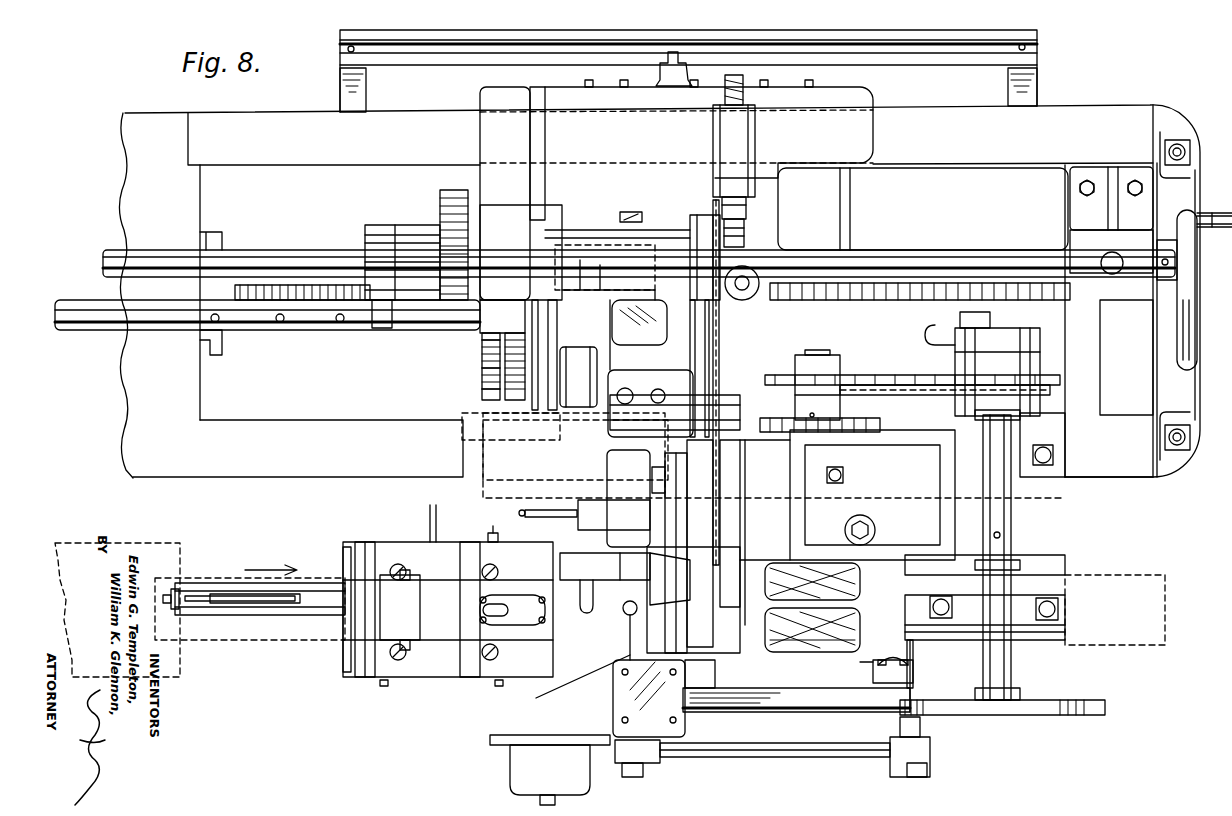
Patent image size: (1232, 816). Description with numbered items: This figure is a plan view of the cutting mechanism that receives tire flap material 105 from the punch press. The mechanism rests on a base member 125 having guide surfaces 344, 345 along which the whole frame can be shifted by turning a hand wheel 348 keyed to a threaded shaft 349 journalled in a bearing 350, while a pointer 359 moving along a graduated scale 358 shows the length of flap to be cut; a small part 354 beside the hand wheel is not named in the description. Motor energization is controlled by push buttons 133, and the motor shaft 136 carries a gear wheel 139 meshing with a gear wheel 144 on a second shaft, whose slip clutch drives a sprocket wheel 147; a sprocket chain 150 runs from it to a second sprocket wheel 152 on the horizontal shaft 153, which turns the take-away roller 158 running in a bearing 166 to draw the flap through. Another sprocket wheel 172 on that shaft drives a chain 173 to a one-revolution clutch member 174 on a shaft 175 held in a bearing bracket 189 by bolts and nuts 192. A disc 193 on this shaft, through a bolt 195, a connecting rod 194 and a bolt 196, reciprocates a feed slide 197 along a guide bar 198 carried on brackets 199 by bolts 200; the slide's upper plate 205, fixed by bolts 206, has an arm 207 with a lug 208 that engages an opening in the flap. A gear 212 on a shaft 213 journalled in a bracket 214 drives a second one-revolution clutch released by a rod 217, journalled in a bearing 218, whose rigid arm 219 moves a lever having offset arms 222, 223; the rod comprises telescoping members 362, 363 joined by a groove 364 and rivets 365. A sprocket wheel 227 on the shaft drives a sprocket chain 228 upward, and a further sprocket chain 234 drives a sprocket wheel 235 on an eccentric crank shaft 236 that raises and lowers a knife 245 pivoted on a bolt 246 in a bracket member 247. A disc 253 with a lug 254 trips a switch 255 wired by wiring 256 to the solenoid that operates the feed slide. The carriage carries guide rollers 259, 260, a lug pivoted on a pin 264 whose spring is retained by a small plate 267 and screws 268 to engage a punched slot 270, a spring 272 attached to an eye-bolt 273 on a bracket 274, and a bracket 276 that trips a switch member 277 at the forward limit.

The tire flap material 105 is at (310, 640).
The base member 125 is at (1158, 478).
The push buttons 133 is at (540, 800).
The shaft 136 is at (165, 250).
The gear wheel 139 is at (631, 212).
The gear wheel 144 is at (570, 250).
The sprocket wheel 147 is at (580, 395).
The sprocket chain 150 is at (680, 370).
The second sprocket wheel 152 is at (760, 390).
The horizontal shaft 153 is at (816, 340).
The take-away roller 158 is at (795, 653).
The bearing 166 is at (800, 527).
The second sprocket wheel 172 is at (779, 374).
The chain 173 is at (902, 385).
The clutch member 174 is at (1040, 356).
The shaft 175 is at (1020, 540).
The bearing bracket 189 is at (1020, 572).
The bolts and nuts 192 is at (1058, 612).
The disc 193 is at (1080, 718).
The connecting rod 194 is at (766, 758).
The bolt 195 is at (931, 766).
The bolt 196 is at (640, 777).
The feed slide 197 is at (686, 724).
The guide bar 198 is at (788, 710).
The brackets 199 is at (870, 668).
The bolts 200 is at (578, 726).
The upper plate 205 is at (628, 745).
The bolts 206 is at (715, 672).
The horizontally extending arm 207 is at (564, 681).
The lug 208 is at (625, 612).
The gear 212 is at (446, 205).
The shaft 213 is at (380, 226).
The bracket 214 is at (552, 228).
The rod 217 is at (236, 345).
The bearing 218 is at (578, 282).
The rigid arm 219 is at (488, 358).
The offset arm 222 is at (488, 375).
The offset arm 223 is at (488, 392).
The sprocket wheel 227 is at (695, 215).
The sprocket chain 228 is at (725, 328).
The sprocket chain 234 is at (742, 460).
The sprocket wheel 235 is at (746, 549).
The eccentric crank shaft 236 is at (650, 600).
The knife 245 is at (700, 528).
The bolt 246 is at (652, 474).
The bracket member 247 is at (742, 480).
The disc 253 is at (748, 245).
The lug 254 is at (750, 228).
The switch 255 is at (756, 143).
The wiring 256 is at (740, 78).
The roller 259 is at (368, 548).
The roller 260 is at (345, 560).
The pin 264 is at (493, 526).
The small plate 267 is at (532, 595).
The screws 268 is at (505, 630).
The punched slot 270 is at (548, 525).
The spring 272 is at (277, 616).
The eye-bolt 273 is at (200, 594).
The bracket 274 is at (198, 616).
The bracket 276 is at (430, 519).
The switch member 277 is at (763, 457).
The guide surface 344 is at (297, 118).
The guide surface 345 is at (306, 462).
The hand wheel 348 is at (1197, 345).
The threaded shaft 349 is at (1038, 302).
The bearing 350 is at (222, 240).
The handle 354 is at (1210, 212).
The graduated scale 358 is at (862, 32).
The pointer 359 is at (676, 50).
The telescoping member 362 is at (485, 333).
The telescoping member 363 is at (88, 332).
The groove 364 is at (380, 330).
The rivets or bolts 365 is at (322, 335).